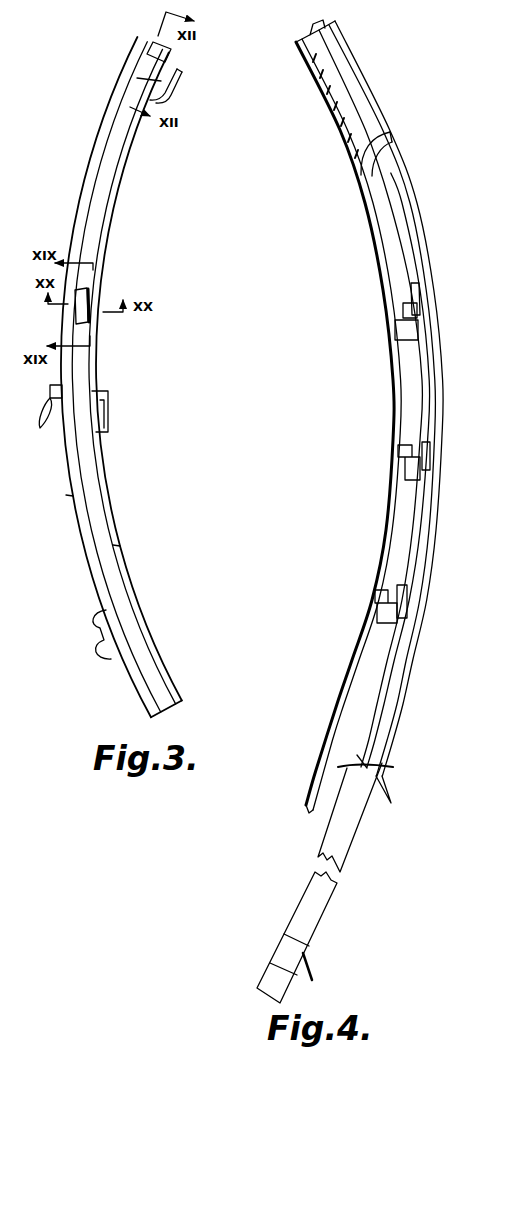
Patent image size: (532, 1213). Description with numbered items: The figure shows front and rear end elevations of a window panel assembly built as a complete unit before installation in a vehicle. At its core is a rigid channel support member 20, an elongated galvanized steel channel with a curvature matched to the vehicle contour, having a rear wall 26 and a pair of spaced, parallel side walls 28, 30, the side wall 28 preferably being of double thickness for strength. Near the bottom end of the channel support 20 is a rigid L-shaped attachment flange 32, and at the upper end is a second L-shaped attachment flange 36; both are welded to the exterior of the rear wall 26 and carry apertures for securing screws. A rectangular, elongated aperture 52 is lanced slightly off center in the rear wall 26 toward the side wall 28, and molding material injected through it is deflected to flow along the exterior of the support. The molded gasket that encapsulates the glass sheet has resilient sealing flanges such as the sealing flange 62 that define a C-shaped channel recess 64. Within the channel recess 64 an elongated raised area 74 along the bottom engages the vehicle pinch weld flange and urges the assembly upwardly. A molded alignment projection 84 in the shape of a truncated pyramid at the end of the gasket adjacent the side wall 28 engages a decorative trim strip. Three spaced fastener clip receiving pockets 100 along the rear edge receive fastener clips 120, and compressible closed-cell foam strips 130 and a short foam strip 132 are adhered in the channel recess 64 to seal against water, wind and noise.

In FIG. 3, the channel support member 20 is at (101, 377).
In FIG. 4, the channel support member 20 is at (357, 836).
In FIG. 3, the rear wall 26 is at (92, 512).
In FIG. 4, the rear wall 26 is at (340, 829).
In FIG. 3, the side wall 28 is at (117, 548).
In FIG. 3, the side wall 30 is at (72, 500).
In FIG. 3, the attachment flange 32 is at (100, 641).
In FIG. 4, the attachment flange 32 is at (290, 962).
In FIG. 3, the attachment flange 36 is at (146, 58).
In FIG. 3, the aperture 52 is at (79, 304).
In FIG. 3, the alignment projection 84 is at (50, 390).
In FIG. 4, the fastener clip receiving pocket 100 is at (432, 288).
In FIG. 4, the fastener clip 120 is at (401, 305).
In FIG. 4, the foam strip 130 is at (410, 375).
In FIG. 4, the foam strip 132 is at (366, 92).
In FIG. 4, the sealing flange 62 is at (360, 648).
In FIG. 4, the channel recess 64 is at (375, 692).
In FIG. 4, the raised area 74 is at (393, 772).